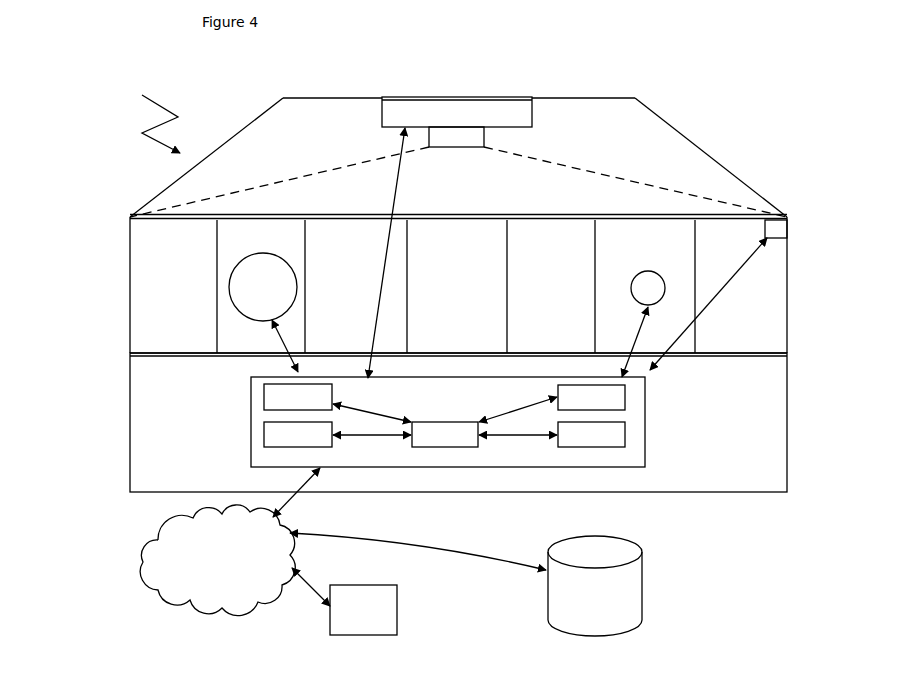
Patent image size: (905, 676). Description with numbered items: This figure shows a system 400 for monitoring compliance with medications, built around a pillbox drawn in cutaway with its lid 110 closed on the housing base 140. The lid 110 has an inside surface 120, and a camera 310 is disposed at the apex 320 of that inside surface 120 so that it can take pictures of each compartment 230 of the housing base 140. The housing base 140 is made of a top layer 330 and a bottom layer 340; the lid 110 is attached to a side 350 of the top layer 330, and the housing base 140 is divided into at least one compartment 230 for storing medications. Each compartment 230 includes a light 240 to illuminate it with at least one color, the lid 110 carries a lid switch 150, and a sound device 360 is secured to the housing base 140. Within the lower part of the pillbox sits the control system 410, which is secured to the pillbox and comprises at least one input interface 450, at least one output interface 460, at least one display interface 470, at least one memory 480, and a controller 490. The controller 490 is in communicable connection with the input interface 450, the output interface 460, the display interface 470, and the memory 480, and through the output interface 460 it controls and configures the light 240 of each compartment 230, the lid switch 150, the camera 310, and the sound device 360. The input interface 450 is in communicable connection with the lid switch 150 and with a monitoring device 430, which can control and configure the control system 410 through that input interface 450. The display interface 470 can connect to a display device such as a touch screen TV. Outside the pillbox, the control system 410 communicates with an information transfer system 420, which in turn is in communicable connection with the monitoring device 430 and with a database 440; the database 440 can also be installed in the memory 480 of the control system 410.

The system 400 is at (157, 108).
The lid 110 is at (658, 115).
The inside surface 120 is at (355, 98).
The apex 320 is at (457, 97).
The camera 310 is at (520, 112).
The side 350 is at (457, 214).
The top layer 330 is at (117, 221).
The housing base 140 is at (788, 283).
The compartment 230 is at (758, 322).
The lid switch 150 is at (782, 230).
The light 240 is at (668, 285).
The sound device 360 is at (230, 287).
The bottom layer 340 is at (117, 485).
The control system 410 is at (252, 390).
The input interface 450 is at (264, 397).
The output interface 460 is at (264, 435).
The display interface 470 is at (625, 398).
The memory 480 is at (625, 435).
The controller 490 is at (445, 447).
The information transfer system 420 is at (157, 538).
The monitoring device 430 is at (330, 627).
The database 440 is at (548, 597).